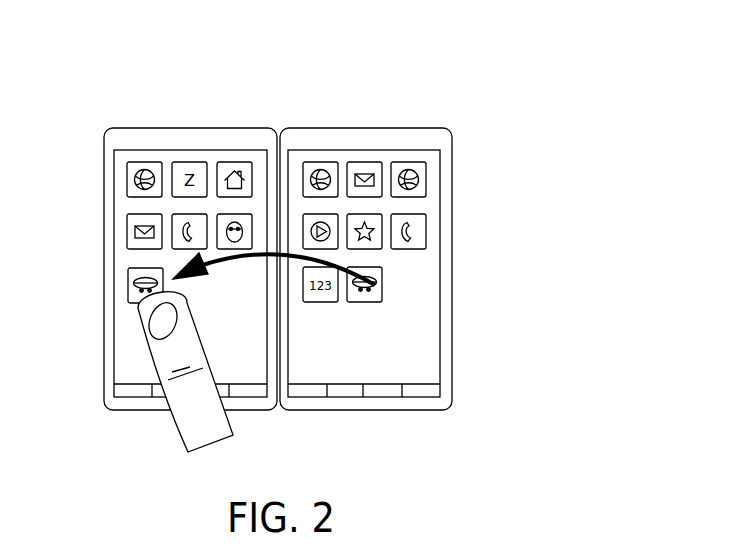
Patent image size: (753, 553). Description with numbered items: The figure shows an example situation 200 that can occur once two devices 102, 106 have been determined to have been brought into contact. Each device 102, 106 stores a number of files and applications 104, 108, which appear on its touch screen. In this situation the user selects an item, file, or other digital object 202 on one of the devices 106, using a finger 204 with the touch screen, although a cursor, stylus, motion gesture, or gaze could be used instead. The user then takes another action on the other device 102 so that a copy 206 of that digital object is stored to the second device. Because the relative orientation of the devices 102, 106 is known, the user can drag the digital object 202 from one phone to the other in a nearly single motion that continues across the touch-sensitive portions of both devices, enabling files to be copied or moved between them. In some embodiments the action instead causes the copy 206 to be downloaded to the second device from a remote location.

The example situation 200 is at (617, 107).
The device 102 is at (185, 129).
The files and applications 104 is at (86, 189).
The device 106 is at (374, 129).
The files and applications 108 is at (476, 189).
The digital object 202 is at (381, 290).
The finger 204 is at (175, 430).
The copy of the digital object 206 is at (128, 278).